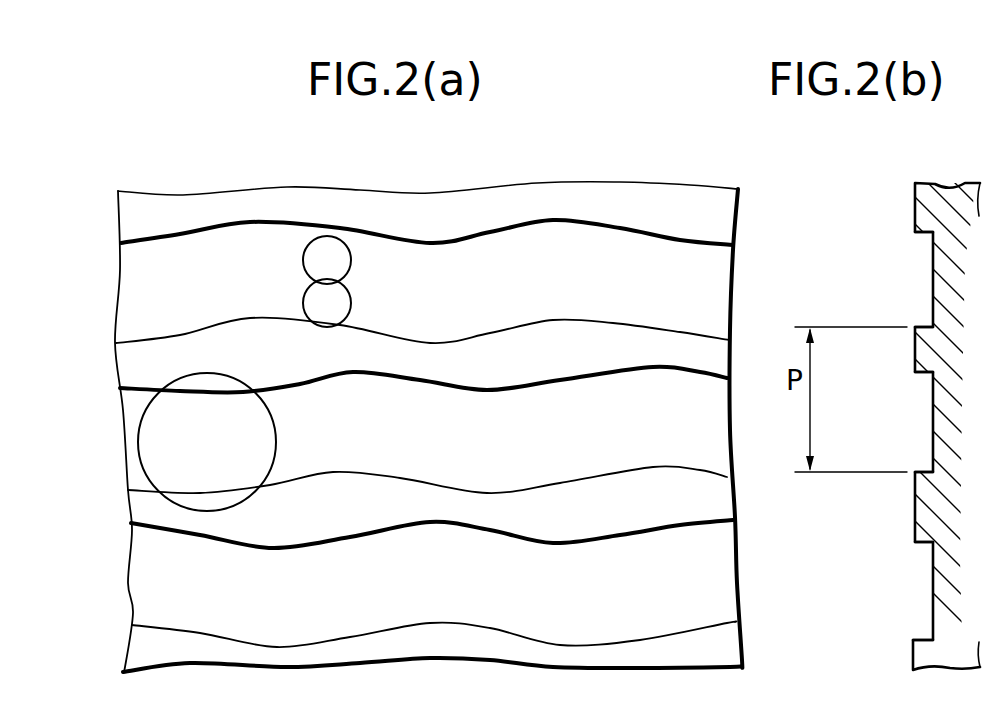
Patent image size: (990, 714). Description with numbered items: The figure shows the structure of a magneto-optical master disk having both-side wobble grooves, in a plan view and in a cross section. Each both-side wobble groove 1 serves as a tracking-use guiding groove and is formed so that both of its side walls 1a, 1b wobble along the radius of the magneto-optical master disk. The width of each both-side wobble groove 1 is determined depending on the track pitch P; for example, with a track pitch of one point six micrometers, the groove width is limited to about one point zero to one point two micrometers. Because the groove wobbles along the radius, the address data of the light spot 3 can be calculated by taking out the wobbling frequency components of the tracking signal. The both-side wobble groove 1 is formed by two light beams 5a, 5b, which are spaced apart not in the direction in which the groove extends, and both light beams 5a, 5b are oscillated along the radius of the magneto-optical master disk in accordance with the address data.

In FIG. 2A, the both-side wobble groove 1 is at (620, 243).
In FIG. 2B, the both-side wobble groove 1 is at (933, 283).
In FIG. 2A, the side wall 1a is at (662, 243).
In FIG. 2B, the side wall 1a is at (917, 236).
In FIG. 2A, the side wall 1b is at (613, 328).
In FIG. 2B, the side wall 1b is at (927, 325).
In FIG. 2A, the light spot 3 is at (223, 382).
In FIG. 2A, the light beam 5a is at (341, 267).
In FIG. 2A, the light beam 5b is at (341, 307).